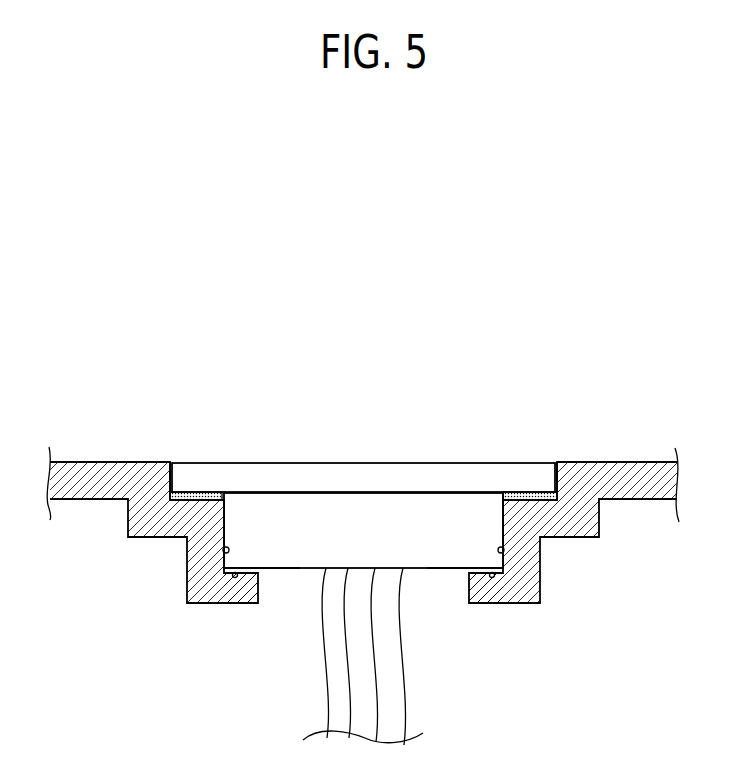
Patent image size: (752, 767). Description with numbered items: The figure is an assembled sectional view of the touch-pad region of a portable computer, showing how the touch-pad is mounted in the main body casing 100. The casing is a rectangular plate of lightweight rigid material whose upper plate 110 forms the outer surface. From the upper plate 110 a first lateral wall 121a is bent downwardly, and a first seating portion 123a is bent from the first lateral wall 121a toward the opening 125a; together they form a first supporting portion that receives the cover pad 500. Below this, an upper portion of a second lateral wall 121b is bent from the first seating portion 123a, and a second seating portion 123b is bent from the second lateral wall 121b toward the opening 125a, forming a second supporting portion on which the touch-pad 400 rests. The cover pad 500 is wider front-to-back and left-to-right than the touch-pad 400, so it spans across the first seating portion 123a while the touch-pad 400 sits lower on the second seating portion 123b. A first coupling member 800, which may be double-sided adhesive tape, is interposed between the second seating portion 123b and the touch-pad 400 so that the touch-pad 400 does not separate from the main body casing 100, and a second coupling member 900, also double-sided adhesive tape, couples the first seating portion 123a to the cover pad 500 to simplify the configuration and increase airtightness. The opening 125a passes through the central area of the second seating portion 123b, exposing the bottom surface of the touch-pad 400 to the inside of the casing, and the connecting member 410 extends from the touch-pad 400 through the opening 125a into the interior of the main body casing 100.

The main body casing 100 is at (90, 490).
The upper plate 110 is at (110, 462).
The first lateral wall 121a is at (173, 470).
The second lateral wall 121b is at (225, 552).
The first seating portion 123a is at (180, 507).
The second seating portion 123b is at (232, 578).
The opening 125a is at (270, 586).
The touch-pad 400 is at (358, 530).
The connecting member 410 is at (340, 703).
The cover pad 500 is at (417, 480).
The first coupling member 800 is at (247, 570).
The second coupling member 900 is at (207, 494).